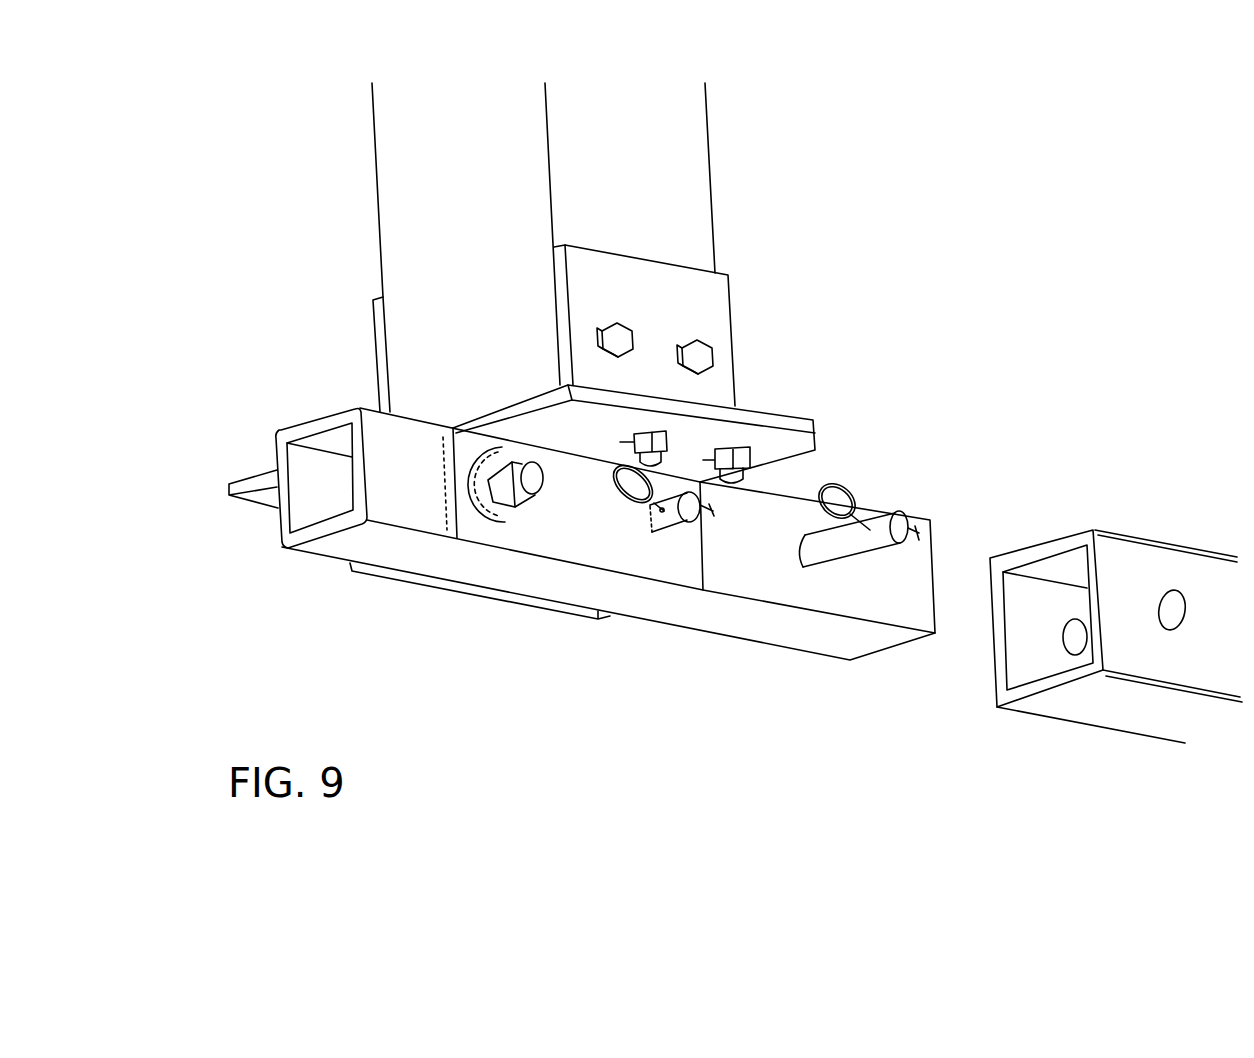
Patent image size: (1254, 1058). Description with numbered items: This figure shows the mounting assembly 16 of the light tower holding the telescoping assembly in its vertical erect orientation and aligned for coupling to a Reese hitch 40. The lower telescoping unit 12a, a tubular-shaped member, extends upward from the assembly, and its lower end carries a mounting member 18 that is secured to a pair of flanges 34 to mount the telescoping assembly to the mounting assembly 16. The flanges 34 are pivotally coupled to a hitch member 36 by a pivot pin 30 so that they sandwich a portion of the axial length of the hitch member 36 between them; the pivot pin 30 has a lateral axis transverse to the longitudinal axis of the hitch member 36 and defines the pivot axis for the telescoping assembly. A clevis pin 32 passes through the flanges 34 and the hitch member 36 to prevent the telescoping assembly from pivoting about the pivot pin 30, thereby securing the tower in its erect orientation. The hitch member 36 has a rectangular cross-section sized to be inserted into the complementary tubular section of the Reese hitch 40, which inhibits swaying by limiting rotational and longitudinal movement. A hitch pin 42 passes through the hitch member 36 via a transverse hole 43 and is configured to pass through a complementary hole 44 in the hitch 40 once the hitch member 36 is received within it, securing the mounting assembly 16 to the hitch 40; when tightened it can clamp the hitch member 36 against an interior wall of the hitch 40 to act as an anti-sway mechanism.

The lower telescoping unit 12a is at (397, 206).
The mounting assembly 16 is at (275, 392).
The mounting member 18 is at (715, 310).
The pivot pin 30 is at (503, 492).
The clevis pin 32 is at (675, 535).
The flanges 34 is at (257, 498).
The hitch member 36 is at (723, 620).
The Reese hitch 40 is at (1094, 708).
The hitch pin 42 is at (878, 527).
The transverse hole 43 is at (800, 540).
The complementary hole 44 is at (1170, 597).